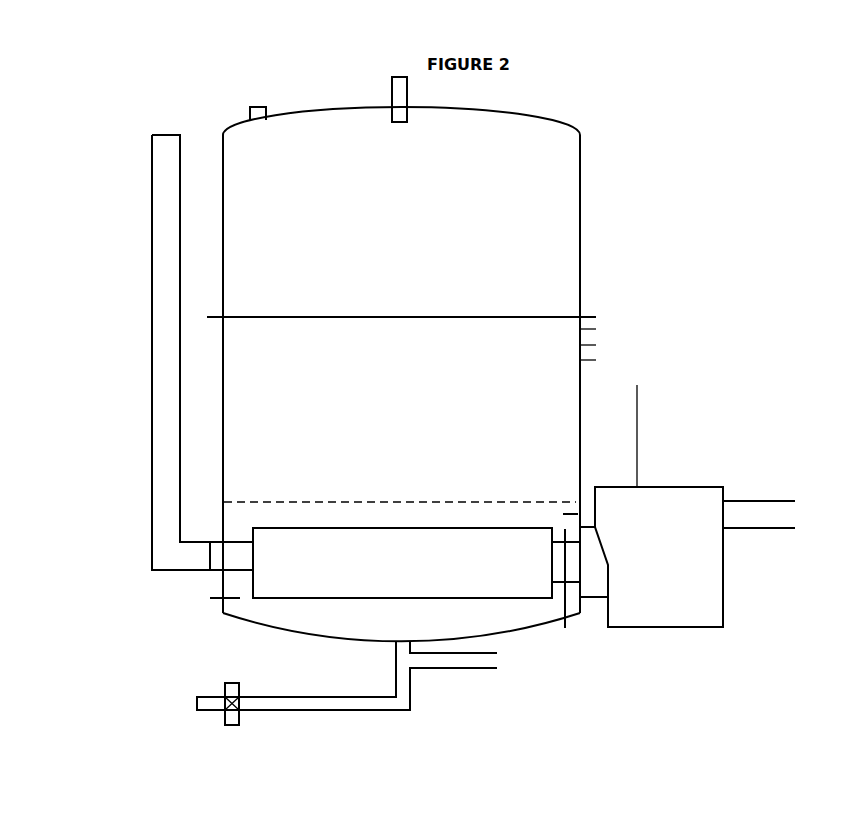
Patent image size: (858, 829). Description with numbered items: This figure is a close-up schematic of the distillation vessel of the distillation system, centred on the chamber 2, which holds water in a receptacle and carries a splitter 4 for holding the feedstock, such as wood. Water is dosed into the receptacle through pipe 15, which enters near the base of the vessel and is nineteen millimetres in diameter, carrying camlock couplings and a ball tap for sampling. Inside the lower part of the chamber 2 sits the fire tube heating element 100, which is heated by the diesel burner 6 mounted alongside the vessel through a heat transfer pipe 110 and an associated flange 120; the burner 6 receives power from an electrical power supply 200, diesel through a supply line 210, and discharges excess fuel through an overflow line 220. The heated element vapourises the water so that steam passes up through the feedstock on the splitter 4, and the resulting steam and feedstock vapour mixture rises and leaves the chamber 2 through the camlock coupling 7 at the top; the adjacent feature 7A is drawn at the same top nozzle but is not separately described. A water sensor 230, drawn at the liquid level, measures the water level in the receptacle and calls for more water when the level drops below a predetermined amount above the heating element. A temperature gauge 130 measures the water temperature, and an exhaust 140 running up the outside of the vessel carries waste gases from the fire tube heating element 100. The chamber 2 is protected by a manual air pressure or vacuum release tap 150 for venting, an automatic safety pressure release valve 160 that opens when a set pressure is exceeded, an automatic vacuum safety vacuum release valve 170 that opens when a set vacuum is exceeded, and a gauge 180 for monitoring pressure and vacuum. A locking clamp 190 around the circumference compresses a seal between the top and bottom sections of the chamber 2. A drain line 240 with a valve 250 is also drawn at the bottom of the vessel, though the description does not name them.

The chamber 2 is at (232, 265).
The splitter 4 is at (540, 310).
The diesel burner 6 is at (725, 593).
The camlock coupling 7 is at (388, 115).
The top nozzle extension 7A is at (387, 82).
The pipe 15 is at (457, 670).
The fire tube heating element 100 is at (287, 596).
The heat transfer pipe 110 is at (585, 578).
The flange 120 is at (557, 588).
The temperature gauge 130 is at (198, 597).
The exhaust 140 is at (145, 370).
The manual air pressure or vacuum release tap 150 is at (246, 117).
The automatic safety pressure release valve 160 is at (596, 329).
The automatic vacuum safety vacuum release valve 170 is at (596, 345).
The gauge 180 is at (596, 360).
The locking clamp 190 is at (596, 317).
The electrical power supply 200 is at (643, 416).
The supply line 210 is at (786, 501).
The overflow line 220 is at (786, 528).
The water sensor 230 is at (555, 510).
The bottom drain line 240 is at (263, 712).
The drain valve 250 is at (223, 700).